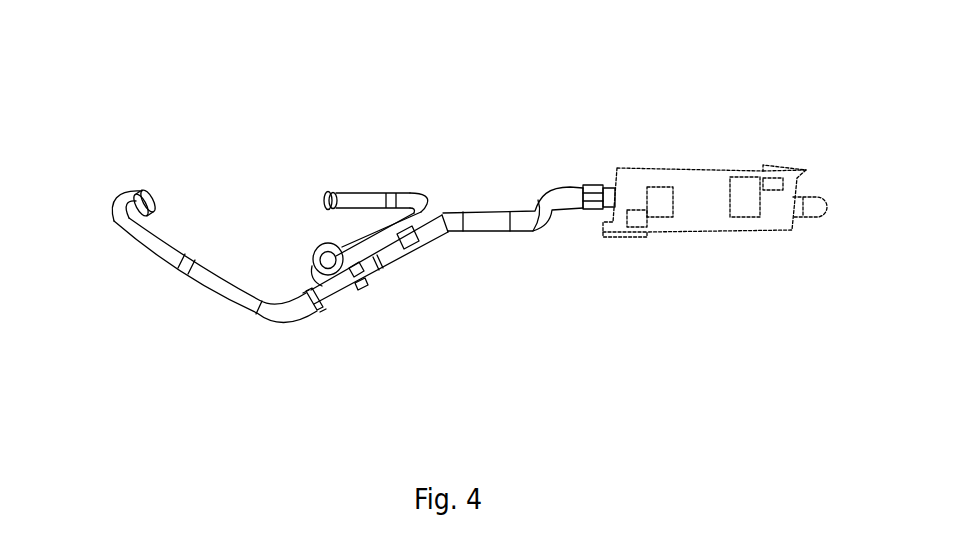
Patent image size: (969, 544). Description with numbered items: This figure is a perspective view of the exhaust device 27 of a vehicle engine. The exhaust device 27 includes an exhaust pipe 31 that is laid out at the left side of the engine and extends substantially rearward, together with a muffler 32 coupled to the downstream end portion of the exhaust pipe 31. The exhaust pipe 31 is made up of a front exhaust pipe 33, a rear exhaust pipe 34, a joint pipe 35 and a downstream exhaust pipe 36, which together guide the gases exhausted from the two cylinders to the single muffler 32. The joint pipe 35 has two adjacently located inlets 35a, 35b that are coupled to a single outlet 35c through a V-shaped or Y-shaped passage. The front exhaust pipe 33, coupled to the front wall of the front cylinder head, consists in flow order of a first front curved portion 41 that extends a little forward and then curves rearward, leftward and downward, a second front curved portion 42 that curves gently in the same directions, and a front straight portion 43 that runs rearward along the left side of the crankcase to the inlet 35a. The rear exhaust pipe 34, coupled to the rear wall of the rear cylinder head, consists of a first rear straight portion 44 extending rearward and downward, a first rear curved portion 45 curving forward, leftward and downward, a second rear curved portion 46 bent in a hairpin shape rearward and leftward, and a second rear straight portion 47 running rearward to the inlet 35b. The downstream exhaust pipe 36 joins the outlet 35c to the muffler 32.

The exhaust device 27 is at (746, 98).
The exhaust pipe 31 is at (598, 152).
The muffler 32 is at (702, 190).
The front exhaust pipe 33 is at (213, 301).
The rear exhaust pipe 34 is at (358, 178).
The joint pipe 35 is at (405, 264).
The inlet 35a is at (378, 270).
The inlet 35b is at (372, 243).
The outlet 35c is at (416, 242).
The downstream exhaust pipe 36 is at (480, 213).
The first front curved portion 41 is at (112, 214).
The second front curved portion 42 is at (147, 242).
The front straight portion 43 is at (343, 292).
The first rear straight portion 44 is at (377, 191).
The first rear curved portion 45 is at (423, 191).
The second rear curved portion 46 is at (314, 268).
The second rear straight portion 47 is at (334, 245).